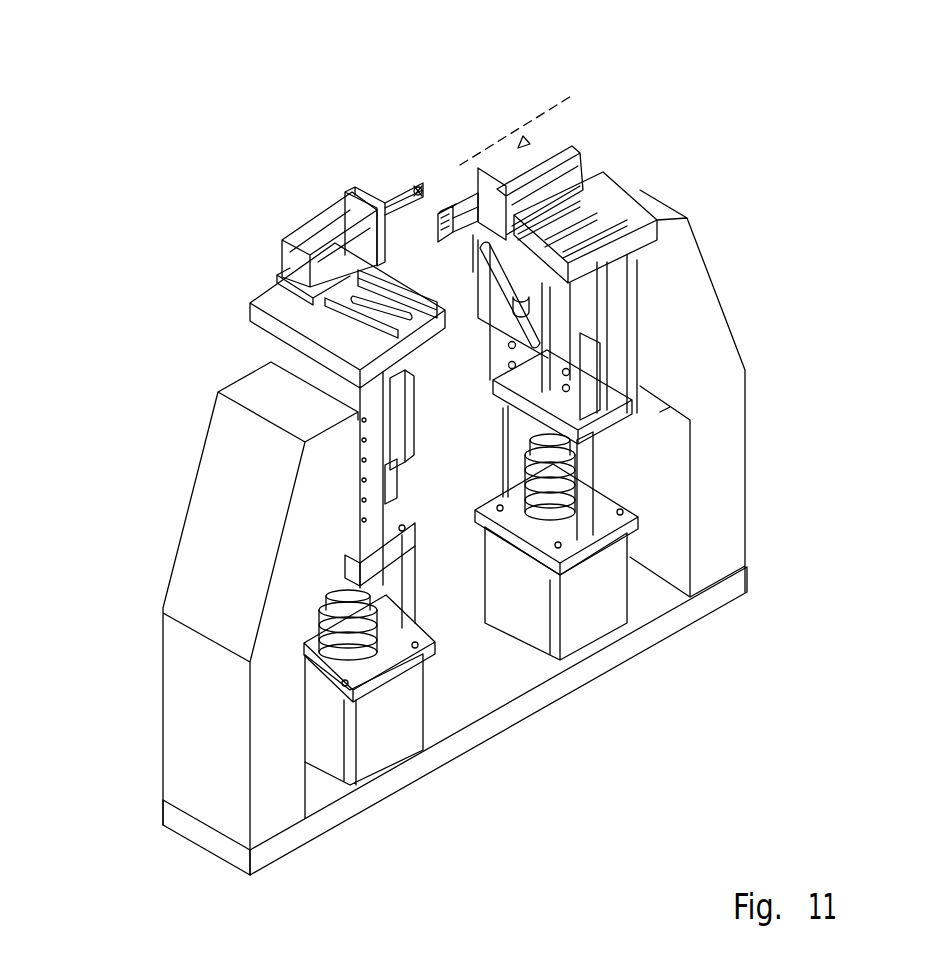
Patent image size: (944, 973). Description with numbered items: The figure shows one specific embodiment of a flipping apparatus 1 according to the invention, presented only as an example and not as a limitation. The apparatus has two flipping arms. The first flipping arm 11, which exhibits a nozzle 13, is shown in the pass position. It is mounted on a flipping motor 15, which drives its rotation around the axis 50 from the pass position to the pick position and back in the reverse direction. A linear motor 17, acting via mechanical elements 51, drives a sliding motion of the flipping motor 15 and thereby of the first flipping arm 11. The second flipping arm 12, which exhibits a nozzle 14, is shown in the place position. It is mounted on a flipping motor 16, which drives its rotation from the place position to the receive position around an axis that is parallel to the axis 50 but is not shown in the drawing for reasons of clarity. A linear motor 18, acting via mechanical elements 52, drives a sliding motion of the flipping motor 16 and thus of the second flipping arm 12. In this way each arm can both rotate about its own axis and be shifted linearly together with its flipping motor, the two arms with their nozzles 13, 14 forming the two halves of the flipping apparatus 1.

The flipping apparatus 1 is at (156, 274).
The first flipping arm 11 is at (405, 183).
The second flipping arm 12 is at (452, 207).
The nozzle 13 is at (432, 195).
The nozzle 14 is at (441, 207).
The flipping motor 15 is at (317, 218).
The flipping motor 16 is at (583, 167).
The linear motor 17 is at (404, 727).
The linear motor 18 is at (612, 604).
The axis 50 is at (554, 100).
The mechanical elements 51 is at (350, 290).
The mechanical elements 52 is at (520, 297).